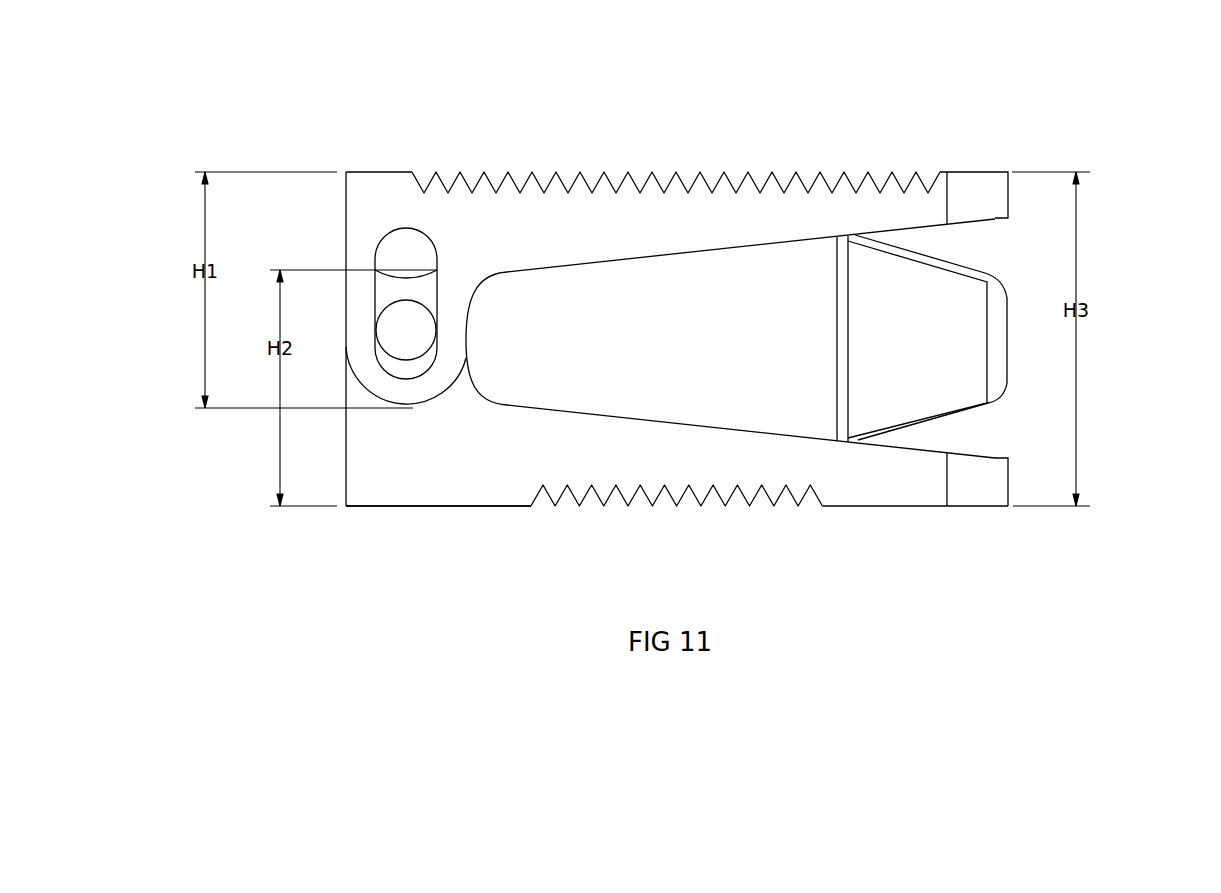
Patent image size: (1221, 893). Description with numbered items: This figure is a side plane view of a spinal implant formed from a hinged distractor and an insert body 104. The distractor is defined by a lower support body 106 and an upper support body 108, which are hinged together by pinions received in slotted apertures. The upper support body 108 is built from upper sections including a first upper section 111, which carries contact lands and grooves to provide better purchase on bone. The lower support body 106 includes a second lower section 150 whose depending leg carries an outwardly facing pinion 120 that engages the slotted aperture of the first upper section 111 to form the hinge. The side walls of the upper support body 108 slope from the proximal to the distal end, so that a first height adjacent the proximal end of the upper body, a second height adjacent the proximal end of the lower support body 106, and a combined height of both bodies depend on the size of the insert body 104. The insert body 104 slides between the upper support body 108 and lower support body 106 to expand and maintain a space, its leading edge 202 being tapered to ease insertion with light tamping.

The insert body 104 is at (699, 397).
The lower support body 106 is at (1005, 520).
The upper support body 108 is at (1003, 147).
The first upper section 111 is at (629, 170).
The pinion 120 is at (403, 325).
The second lower section 150 is at (490, 507).
The leading edge 202 is at (942, 380).